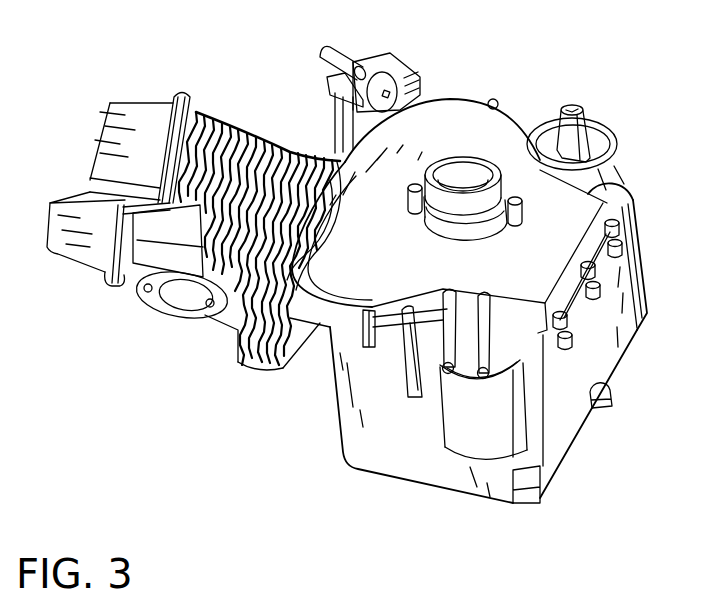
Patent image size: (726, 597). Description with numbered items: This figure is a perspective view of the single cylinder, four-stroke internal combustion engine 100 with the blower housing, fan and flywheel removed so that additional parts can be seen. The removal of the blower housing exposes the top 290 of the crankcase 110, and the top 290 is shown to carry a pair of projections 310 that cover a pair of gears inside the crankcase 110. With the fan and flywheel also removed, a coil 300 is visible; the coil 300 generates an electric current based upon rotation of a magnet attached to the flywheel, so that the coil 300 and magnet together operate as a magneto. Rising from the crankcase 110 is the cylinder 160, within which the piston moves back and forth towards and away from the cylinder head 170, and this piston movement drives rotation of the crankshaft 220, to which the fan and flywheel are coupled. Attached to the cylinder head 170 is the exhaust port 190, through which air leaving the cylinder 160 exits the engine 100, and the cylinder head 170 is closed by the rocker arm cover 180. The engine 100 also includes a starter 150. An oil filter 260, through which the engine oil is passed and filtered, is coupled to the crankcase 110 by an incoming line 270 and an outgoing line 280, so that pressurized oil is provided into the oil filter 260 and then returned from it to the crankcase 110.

The single cylinder engine 100 is at (210, 434).
The crankcase 110 is at (388, 477).
The starter 150 is at (612, 173).
The cylinder 160 is at (268, 370).
The cylinder head 170 is at (227, 132).
The rocker arm cover 180 is at (70, 258).
The exhaust port 190 is at (152, 297).
The crankshaft 220 is at (466, 188).
The oil filter 260 is at (517, 407).
The incoming line 270 is at (447, 341).
The outgoing line 280 is at (484, 297).
The top of the crankcase 290 is at (456, 100).
The coil 300 is at (350, 56).
The projections 310 is at (333, 160).